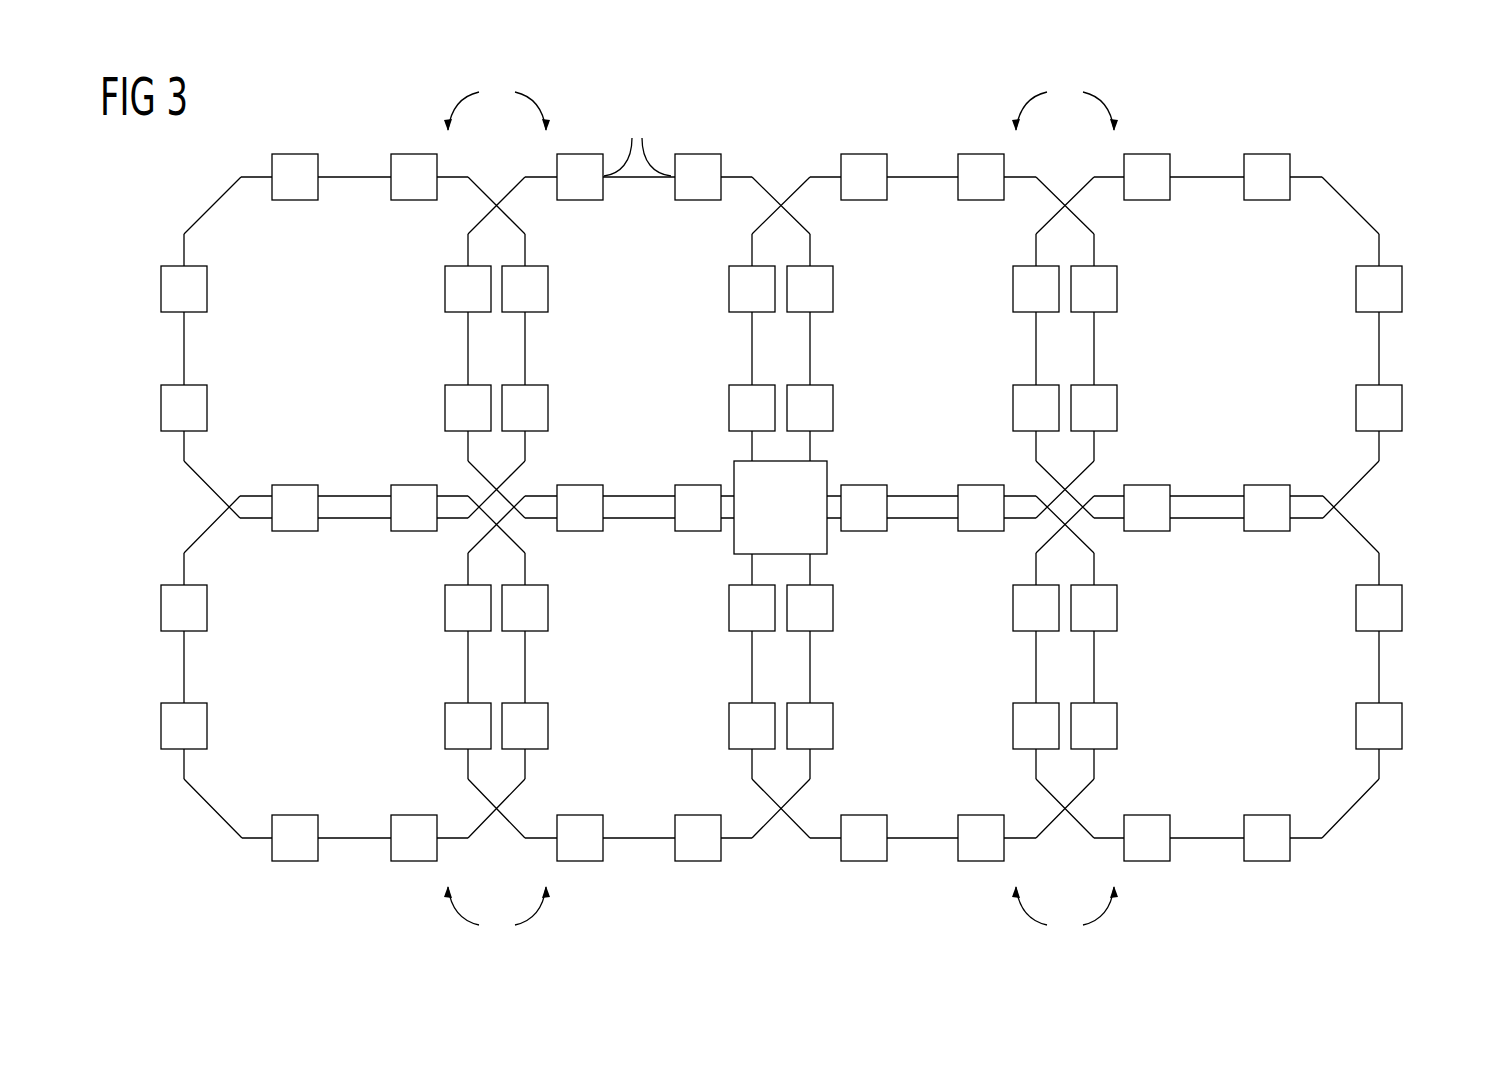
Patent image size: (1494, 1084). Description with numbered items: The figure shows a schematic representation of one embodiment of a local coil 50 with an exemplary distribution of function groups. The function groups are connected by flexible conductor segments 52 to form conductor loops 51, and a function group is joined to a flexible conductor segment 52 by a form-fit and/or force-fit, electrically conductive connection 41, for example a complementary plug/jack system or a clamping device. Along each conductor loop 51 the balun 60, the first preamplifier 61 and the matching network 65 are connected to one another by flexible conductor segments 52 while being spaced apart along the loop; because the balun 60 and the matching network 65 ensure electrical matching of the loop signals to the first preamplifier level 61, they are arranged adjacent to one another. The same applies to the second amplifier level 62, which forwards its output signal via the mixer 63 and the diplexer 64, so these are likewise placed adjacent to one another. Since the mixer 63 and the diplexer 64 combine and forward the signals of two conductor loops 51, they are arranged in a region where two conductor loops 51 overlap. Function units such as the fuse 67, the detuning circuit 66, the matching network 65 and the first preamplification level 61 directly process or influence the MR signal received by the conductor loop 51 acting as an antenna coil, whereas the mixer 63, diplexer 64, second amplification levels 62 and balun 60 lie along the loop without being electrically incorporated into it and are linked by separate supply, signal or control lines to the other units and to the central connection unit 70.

The local coil 50 is at (1405, 118).
The conductor loop 51 is at (781, 509).
The flexible conductor segment 52 is at (254, 176).
The electrically conductive connection 41 is at (637, 139).
The balun 60 is at (207, 289).
The first preamplifier 61 is at (297, 200).
The second amplifier level 62 is at (207, 406).
The mixer 63 is at (297, 531).
The diplexer 64 is at (416, 531).
The matching network 65 is at (416, 200).
The detuning circuit 66 is at (548, 406).
The fuse 67 is at (548, 289).
The connection unit 70 is at (766, 526).